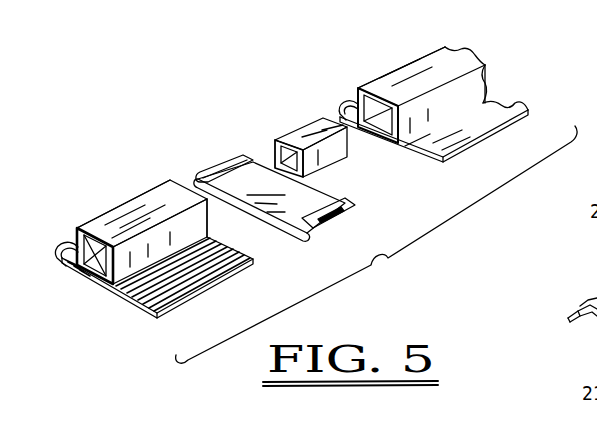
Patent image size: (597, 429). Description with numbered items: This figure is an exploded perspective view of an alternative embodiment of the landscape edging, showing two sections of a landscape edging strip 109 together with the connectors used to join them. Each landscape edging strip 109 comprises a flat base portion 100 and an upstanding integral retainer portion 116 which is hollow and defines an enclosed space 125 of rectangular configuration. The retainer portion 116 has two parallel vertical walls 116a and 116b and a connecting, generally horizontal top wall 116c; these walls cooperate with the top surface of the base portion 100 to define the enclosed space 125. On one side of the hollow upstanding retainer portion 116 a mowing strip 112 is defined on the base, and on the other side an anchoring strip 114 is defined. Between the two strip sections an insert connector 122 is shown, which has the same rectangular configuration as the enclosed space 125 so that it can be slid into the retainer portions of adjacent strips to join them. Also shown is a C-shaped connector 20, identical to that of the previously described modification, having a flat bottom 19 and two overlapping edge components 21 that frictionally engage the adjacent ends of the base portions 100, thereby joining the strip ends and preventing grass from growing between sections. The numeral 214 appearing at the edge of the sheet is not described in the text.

The base portion 100 is at (320, 184).
The landscape edging strip 109 is at (115, 164).
The mowing strip 112 is at (243, 265).
The anchoring strip 114 is at (58, 248).
The upstanding integral retainer portion 116 is at (135, 170).
The vertical wall 116a is at (200, 230).
The vertical wall 116b is at (78, 228).
The top wall 116c is at (168, 186).
The enclosed space 125 is at (93, 283).
The insert connector 122 is at (289, 164).
The flat bottom 19 is at (276, 231).
The C-shaped connector 20 is at (306, 185).
The overlapping edge components 21 is at (227, 166).
The adjacent figure fragment 214 is at (578, 311).